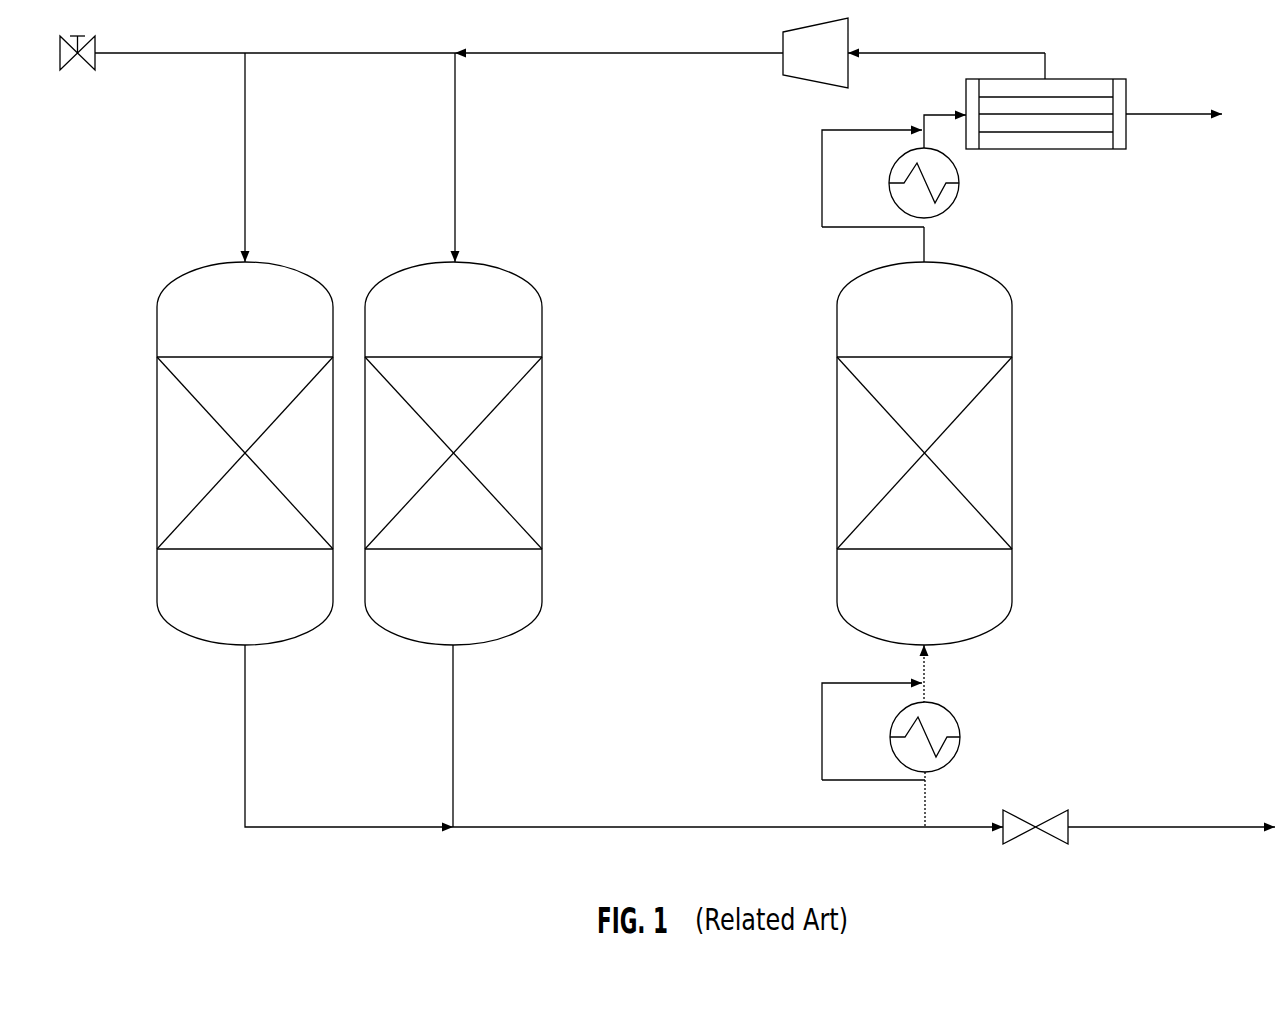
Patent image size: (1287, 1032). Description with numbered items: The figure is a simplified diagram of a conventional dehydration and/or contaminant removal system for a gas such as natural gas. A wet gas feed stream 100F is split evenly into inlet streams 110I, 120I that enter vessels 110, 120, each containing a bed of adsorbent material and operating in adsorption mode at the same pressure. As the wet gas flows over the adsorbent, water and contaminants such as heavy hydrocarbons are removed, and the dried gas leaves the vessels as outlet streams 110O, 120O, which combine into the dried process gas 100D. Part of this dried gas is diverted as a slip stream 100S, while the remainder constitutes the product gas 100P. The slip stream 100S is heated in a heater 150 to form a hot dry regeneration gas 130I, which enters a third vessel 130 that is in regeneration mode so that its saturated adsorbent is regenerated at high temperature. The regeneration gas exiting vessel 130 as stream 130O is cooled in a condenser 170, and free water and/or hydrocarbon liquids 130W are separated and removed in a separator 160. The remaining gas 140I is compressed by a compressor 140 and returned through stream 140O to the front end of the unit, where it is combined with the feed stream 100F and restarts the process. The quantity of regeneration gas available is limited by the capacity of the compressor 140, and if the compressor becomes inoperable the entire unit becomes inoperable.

The wet gas feed stream 100F is at (257, 44).
The inlet stream 110I is at (216, 157).
The inlet stream 120I is at (421, 157).
The compressor outlet stream 140O is at (619, 37).
The compressor 140 is at (838, 67).
The remaining gas 140I is at (946, 46).
The separator 160 is at (1046, 132).
The free water and/or hydrocarbon liquids 130W is at (1174, 98).
The condenser 170 is at (894, 169).
The regeneration gas exiting vessel 130 130O is at (888, 246).
The vessel 130 is at (946, 337).
The dry regeneration gas 130I is at (875, 712).
The heater 150 is at (891, 741).
The slip stream 100S is at (886, 799).
The dried process gas 100D is at (728, 810).
The product gas 100P is at (1139, 817).
The outlet stream 110O is at (306, 738).
The outlet stream 120O is at (407, 736).
The vessel 110 is at (265, 337).
The vessel 120 is at (475, 337).